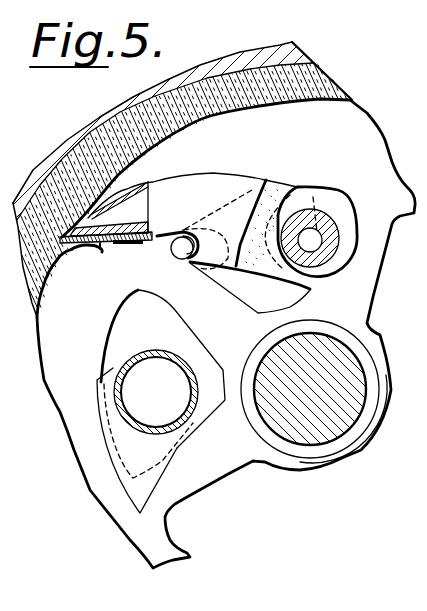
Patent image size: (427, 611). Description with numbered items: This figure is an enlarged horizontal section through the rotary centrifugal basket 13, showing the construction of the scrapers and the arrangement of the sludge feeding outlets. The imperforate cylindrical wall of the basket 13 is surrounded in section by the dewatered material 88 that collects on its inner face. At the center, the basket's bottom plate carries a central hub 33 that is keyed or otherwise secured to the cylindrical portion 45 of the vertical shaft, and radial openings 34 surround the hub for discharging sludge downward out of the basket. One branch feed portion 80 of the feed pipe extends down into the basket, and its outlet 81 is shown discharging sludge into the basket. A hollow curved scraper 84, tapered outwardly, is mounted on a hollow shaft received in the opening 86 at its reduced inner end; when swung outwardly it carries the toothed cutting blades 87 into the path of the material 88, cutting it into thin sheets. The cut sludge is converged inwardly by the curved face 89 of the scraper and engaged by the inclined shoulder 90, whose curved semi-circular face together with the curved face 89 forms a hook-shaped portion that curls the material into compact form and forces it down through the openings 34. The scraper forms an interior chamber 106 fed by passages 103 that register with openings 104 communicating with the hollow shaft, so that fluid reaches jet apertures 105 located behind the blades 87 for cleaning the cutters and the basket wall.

The centrifugal basket 13 is at (90, 130).
The material 88 is at (288, 95).
The toothed cutting blades 87 is at (83, 249).
The jet apertures 105 is at (113, 186).
The interior chambers 106 is at (107, 215).
The hollow curved scrapers 84 is at (243, 148).
The passages 103 is at (301, 200).
The openings 104 is at (348, 172).
The openings 86 is at (336, 228).
The curved face 89 is at (160, 231).
The inclined shoulder 90 is at (188, 262).
The radial openings 34 is at (163, 369).
The branch feed portions 80 is at (180, 358).
The outlet 81 is at (97, 378).
The central hub 33 is at (318, 320).
The cylindrical portion 45 is at (351, 363).